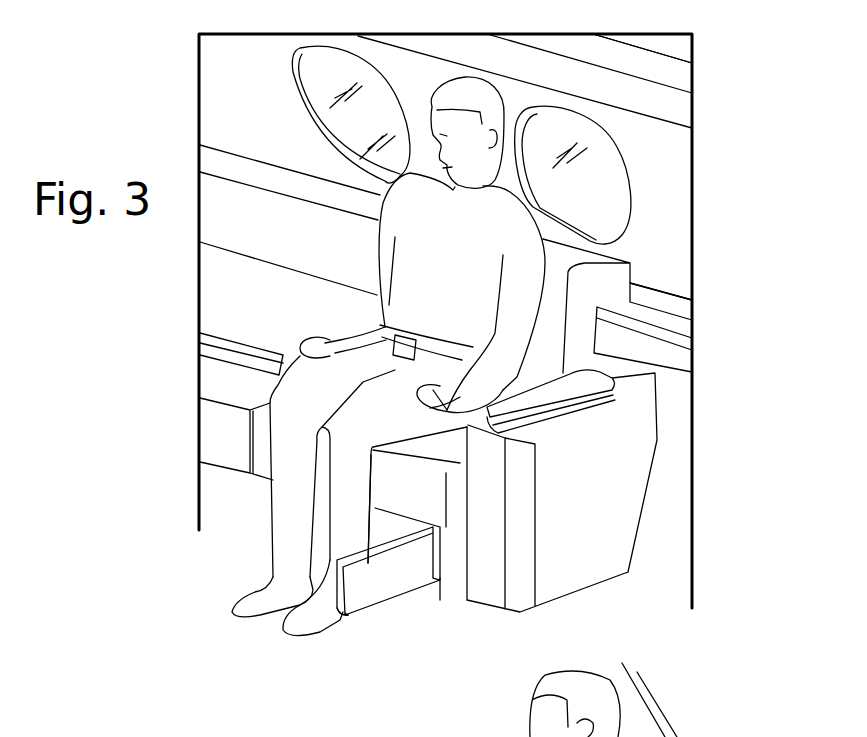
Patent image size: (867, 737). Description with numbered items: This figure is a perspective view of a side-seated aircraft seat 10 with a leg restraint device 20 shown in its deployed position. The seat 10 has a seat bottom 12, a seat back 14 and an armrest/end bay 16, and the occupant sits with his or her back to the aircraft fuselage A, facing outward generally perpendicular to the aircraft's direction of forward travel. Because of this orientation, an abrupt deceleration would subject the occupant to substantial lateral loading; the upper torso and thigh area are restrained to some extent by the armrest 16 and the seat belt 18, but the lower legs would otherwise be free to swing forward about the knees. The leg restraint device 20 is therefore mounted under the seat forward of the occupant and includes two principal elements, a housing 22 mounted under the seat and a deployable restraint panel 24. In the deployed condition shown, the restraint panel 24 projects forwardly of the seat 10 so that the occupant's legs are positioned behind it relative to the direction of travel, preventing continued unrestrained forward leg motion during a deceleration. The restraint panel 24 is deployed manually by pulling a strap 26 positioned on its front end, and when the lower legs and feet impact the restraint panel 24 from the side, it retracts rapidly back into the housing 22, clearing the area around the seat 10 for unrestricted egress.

The seat 10 is at (680, 252).
The aircraft fuselage A is at (692, 162).
The seat bottom 12 is at (453, 547).
The seat back 14 is at (605, 290).
The armrest/end bay 16 is at (647, 433).
The seat belt 18 is at (327, 332).
The leg restraint device 20 is at (448, 600).
The housing 22 is at (395, 497).
The restraint panel 24 is at (402, 568).
The strap 26 is at (305, 612).